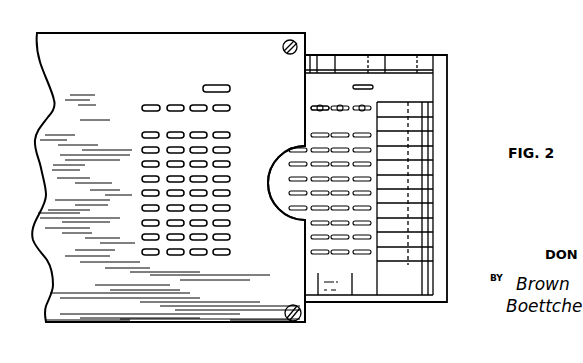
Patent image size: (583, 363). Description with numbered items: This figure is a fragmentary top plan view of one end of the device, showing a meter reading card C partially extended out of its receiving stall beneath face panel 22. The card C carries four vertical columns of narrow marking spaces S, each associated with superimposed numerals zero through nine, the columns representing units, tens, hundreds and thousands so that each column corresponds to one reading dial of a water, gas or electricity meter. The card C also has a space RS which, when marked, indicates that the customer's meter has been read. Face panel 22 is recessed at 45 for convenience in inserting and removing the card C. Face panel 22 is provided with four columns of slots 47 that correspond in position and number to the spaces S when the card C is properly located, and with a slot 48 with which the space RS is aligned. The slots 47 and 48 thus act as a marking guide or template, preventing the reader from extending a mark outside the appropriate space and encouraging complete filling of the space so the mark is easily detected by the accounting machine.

The face panel 22 is at (179, 38).
The recess 45 is at (283, 156).
The slots 47 is at (230, 105).
The slot 48 is at (218, 85).
The marking spaces S is at (320, 105).
The space RS is at (363, 84).
The meter reading card C is at (448, 73).